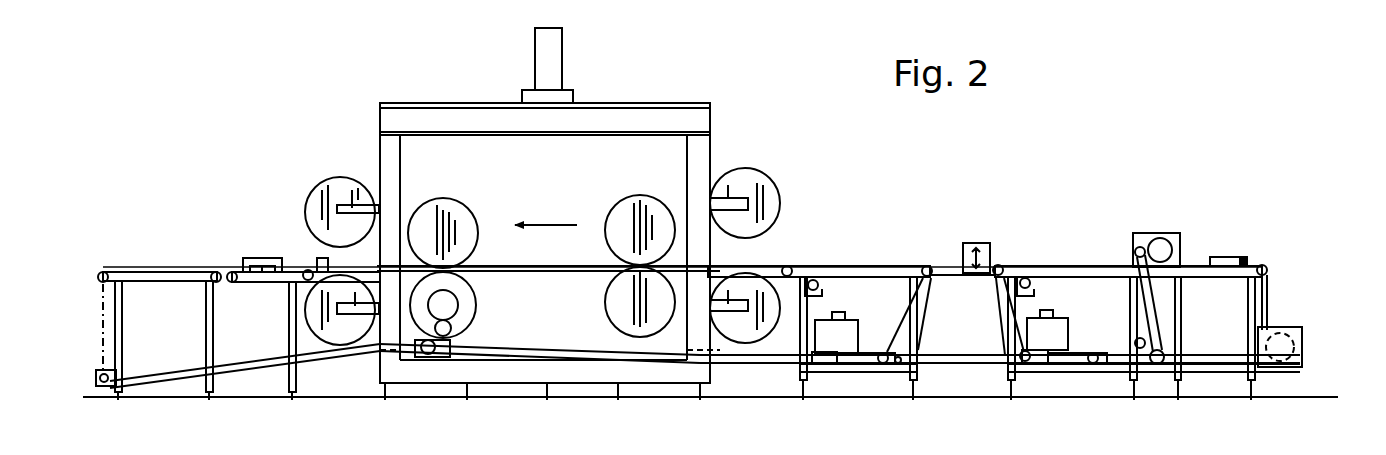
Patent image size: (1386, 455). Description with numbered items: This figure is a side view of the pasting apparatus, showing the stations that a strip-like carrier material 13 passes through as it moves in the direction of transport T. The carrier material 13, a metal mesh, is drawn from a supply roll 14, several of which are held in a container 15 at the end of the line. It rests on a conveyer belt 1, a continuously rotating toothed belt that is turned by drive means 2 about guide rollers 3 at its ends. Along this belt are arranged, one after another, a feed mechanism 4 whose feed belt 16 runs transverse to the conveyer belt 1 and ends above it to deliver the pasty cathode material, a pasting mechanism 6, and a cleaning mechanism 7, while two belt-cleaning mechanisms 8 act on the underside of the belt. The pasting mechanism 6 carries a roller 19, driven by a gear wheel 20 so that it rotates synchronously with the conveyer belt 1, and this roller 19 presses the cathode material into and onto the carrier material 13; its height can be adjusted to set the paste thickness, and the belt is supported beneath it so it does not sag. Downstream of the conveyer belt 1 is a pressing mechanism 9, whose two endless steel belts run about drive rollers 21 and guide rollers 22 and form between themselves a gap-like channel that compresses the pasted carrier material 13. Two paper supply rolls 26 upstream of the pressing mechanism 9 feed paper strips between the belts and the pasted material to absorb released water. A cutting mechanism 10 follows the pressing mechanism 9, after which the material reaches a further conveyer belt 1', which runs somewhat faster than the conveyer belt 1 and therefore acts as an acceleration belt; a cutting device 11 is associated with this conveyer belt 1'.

The conveyer belt 1 is at (1004, 288).
The further conveyer belt 1' is at (241, 298).
The drive means 2 is at (102, 283).
The guide rollers 3 is at (101, 272).
The feed mechanism 4 is at (1220, 250).
The pasting mechanism 6 is at (1158, 228).
The cleaning mechanism 7 is at (974, 233).
The belt-cleaning mechanisms 8 is at (815, 280).
The pressing mechanism 9 is at (623, 85).
The cutting mechanism 10 is at (310, 255).
The cutting device 11 is at (232, 250).
The carrier material 13 is at (1268, 298).
The supply roll 14 is at (1283, 342).
The container 15 is at (1300, 361).
The feed belt 16 is at (1243, 259).
The roller 19 is at (1178, 232).
The gear wheel 20 is at (1140, 250).
The drive rollers 21 is at (450, 213).
The guide rollers 22 is at (650, 217).
The paper supply rolls 26 is at (765, 185).
The direction of transport T is at (546, 224).